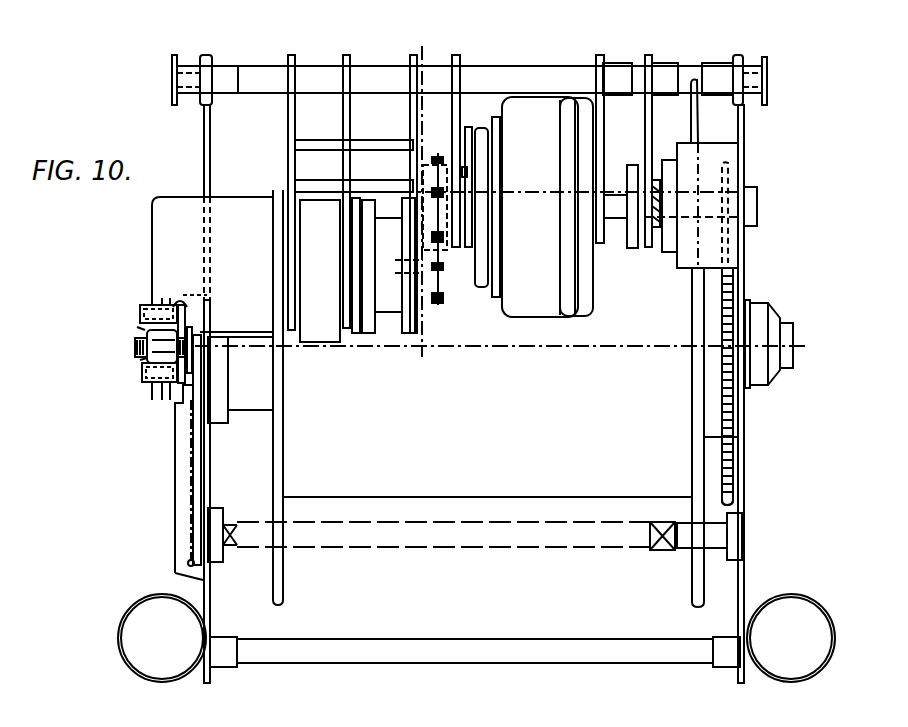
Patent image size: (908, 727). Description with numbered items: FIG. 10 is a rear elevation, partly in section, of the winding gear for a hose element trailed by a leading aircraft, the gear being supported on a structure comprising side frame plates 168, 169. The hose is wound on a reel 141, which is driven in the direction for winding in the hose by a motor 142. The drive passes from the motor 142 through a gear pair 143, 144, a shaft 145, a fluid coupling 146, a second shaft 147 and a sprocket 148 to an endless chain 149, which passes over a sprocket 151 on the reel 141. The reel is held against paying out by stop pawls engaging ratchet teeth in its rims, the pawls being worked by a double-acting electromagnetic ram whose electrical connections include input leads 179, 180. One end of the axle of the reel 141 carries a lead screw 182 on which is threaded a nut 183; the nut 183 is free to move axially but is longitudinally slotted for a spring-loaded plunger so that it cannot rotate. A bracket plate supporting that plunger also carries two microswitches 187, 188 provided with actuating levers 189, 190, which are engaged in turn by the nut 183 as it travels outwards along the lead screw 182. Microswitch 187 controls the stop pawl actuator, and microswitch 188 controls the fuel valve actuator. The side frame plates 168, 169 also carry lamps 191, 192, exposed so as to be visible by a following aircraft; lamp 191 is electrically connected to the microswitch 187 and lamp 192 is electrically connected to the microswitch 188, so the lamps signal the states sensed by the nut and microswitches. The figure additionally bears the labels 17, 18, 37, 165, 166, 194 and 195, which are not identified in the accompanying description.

The section line 17 is at (66, 283).
The section line 18 is at (428, 356).
The drive coupling 37 is at (782, 337).
The reel 141 is at (632, 568).
The motor 142 is at (177, 210).
The gear 143 is at (443, 262).
The gear 144 is at (423, 180).
The shaft 145 is at (467, 128).
The fluid coupling 146 is at (533, 297).
The second shaft 147 is at (657, 240).
The sprocket 148 is at (735, 240).
The endless chain 149 is at (725, 298).
The sprocket 151 is at (737, 492).
The bracket 165 is at (170, 398).
The support plate 166 is at (157, 397).
The side frame plate 168 is at (203, 590).
The side frame plate 169 is at (745, 588).
The input lead 179 is at (171, 300).
The input lead 180 is at (162, 302).
The lead screw 182 is at (138, 342).
The nut 183 is at (167, 340).
The microswitch 187 is at (142, 312).
The microswitch 188 is at (142, 370).
The actuating lever 189 is at (137, 330).
The actuating lever 190 is at (143, 358).
The lamp 191 is at (118, 618).
The lamp 192 is at (837, 623).
The lead wire 194 is at (150, 302).
The lower lead posts 195 is at (150, 385).